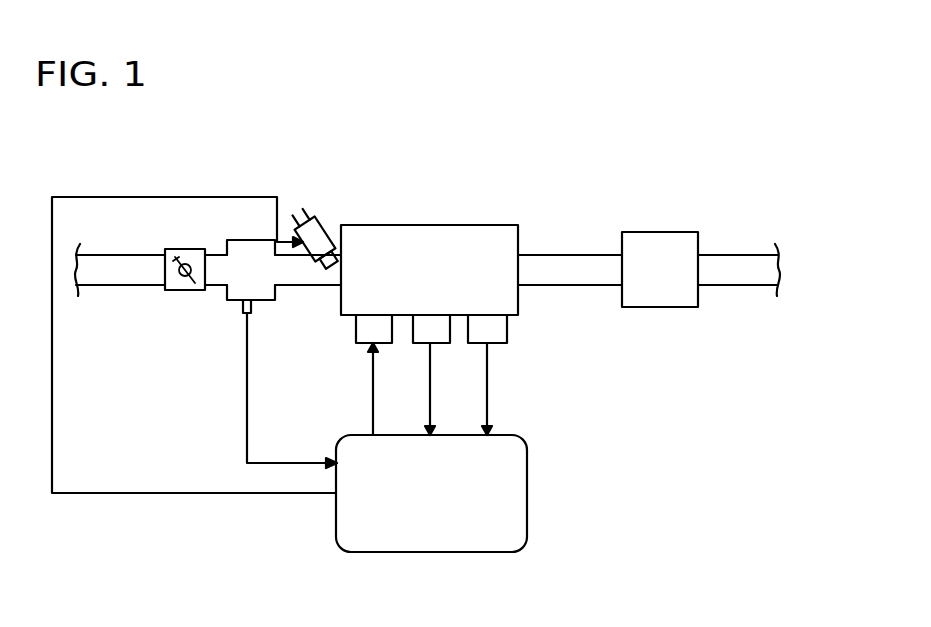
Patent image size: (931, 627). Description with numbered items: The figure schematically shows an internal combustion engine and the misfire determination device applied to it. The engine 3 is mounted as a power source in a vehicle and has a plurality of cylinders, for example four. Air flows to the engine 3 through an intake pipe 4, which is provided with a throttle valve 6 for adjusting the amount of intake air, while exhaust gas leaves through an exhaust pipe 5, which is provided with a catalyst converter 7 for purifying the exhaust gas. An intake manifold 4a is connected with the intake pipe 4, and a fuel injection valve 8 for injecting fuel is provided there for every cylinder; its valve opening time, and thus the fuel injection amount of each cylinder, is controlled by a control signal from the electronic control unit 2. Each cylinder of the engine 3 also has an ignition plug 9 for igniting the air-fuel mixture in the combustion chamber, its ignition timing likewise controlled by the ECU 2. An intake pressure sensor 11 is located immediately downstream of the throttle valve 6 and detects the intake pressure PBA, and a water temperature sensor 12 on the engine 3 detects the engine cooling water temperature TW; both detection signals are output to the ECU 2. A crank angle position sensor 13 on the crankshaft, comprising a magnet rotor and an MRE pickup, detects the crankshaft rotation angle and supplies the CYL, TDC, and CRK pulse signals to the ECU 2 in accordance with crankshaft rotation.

The electronic control unit (ECU) 2 is at (527, 468).
The internal combustion engine 3 is at (428, 225).
The intake pipe 4 is at (103, 255).
The intake manifold 4a is at (312, 287).
The exhaust pipe 5 is at (565, 255).
The throttle valve 6 is at (178, 249).
The catalyst converter 7 is at (662, 232).
The fuel injection valve 8 is at (324, 222).
The ignition plug 9 is at (356, 343).
The intake pressure sensor 11 is at (243, 316).
The water temperature sensor 12 is at (446, 344).
The crank angle position sensor 13 is at (508, 323).